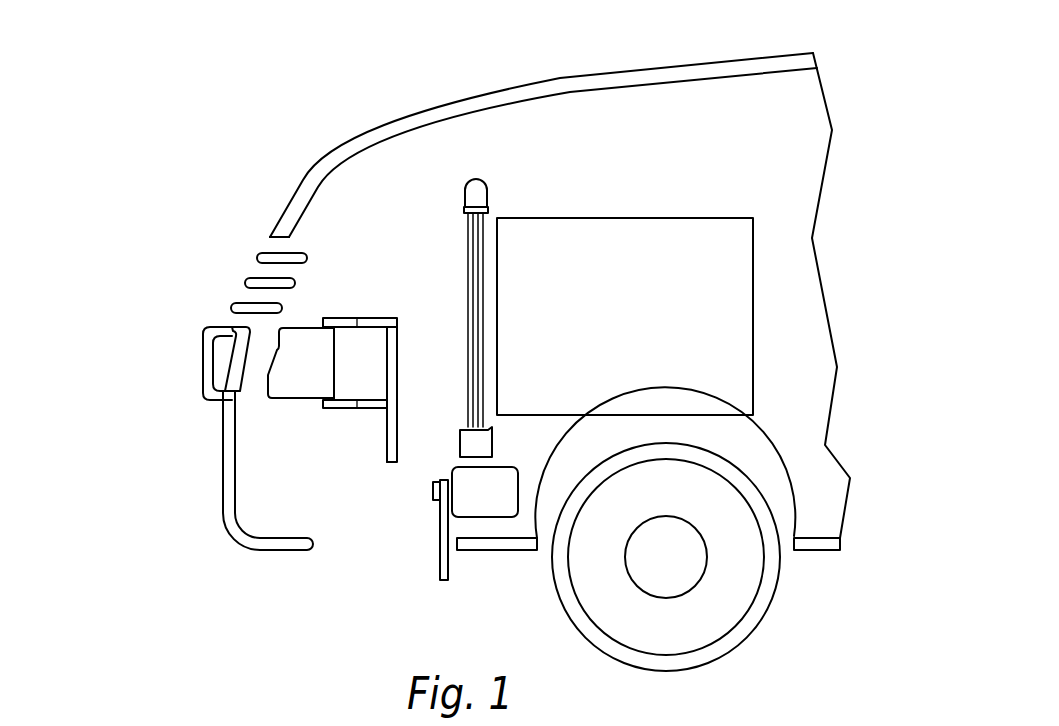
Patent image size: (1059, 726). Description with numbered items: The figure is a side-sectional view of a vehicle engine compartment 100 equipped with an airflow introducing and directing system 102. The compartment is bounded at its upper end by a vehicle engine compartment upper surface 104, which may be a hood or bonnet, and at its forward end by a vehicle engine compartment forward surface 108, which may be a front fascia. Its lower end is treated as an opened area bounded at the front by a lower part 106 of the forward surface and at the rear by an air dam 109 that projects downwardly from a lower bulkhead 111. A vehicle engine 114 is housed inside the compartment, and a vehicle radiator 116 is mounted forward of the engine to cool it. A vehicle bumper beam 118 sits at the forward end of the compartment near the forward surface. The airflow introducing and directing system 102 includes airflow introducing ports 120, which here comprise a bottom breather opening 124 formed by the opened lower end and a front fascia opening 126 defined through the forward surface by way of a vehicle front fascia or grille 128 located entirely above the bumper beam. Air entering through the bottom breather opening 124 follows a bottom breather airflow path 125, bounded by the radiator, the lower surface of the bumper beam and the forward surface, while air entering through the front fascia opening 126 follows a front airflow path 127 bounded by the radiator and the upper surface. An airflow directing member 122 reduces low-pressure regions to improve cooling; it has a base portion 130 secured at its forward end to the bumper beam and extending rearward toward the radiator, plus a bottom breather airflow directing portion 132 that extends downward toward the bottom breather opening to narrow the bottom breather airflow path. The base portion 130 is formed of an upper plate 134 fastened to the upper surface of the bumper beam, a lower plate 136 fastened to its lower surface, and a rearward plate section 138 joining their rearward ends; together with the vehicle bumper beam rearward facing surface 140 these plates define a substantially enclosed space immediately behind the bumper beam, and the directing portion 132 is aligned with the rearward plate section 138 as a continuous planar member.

The vehicle engine compartment 100 is at (447, 174).
The airflow introducing and directing system 102 is at (139, 231).
The vehicle engine compartment upper surface 104 is at (393, 130).
The lower part of the forward surface 106 is at (290, 551).
The vehicle engine compartment forward surface 108 is at (222, 475).
The air dam 109 is at (448, 570).
The lower bulkhead 111 is at (492, 493).
The vehicle engine 114 is at (703, 222).
The vehicle radiator 116 is at (488, 195).
The vehicle bumper beam 118 is at (258, 418).
The airflow introducing ports 120 is at (172, 287).
The airflow directing member 122 is at (347, 430).
The bottom breather opening 124 is at (421, 582).
The bottom breather airflow path 125 is at (329, 496).
The front fascia opening 126 is at (249, 268).
The front airflow path 127 is at (355, 211).
The vehicle front fascia or grille 128 is at (266, 252).
The base portion 130 is at (402, 298).
The bottom breather airflow directing portion 132 is at (393, 452).
The upper plate 134 is at (352, 320).
The lower plate 136 is at (343, 410).
The rearward plate section 138 is at (393, 372).
The vehicle bumper beam rearward facing surface 140 is at (337, 363).